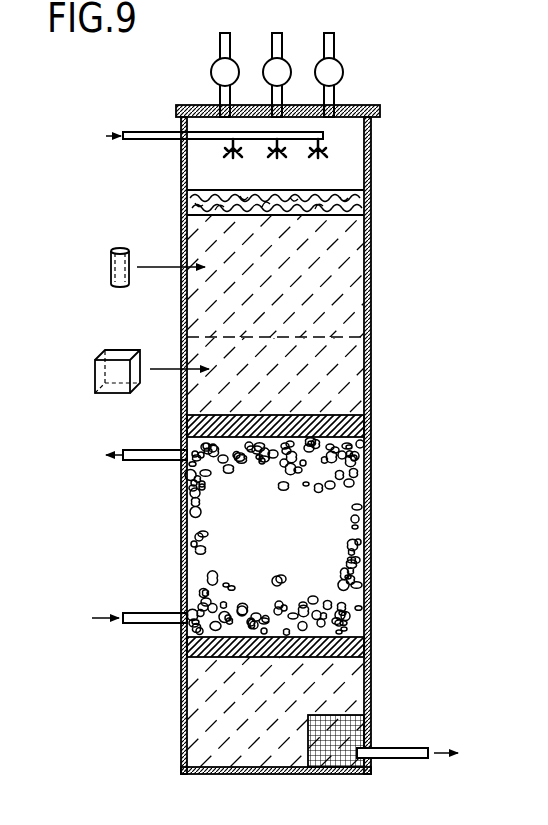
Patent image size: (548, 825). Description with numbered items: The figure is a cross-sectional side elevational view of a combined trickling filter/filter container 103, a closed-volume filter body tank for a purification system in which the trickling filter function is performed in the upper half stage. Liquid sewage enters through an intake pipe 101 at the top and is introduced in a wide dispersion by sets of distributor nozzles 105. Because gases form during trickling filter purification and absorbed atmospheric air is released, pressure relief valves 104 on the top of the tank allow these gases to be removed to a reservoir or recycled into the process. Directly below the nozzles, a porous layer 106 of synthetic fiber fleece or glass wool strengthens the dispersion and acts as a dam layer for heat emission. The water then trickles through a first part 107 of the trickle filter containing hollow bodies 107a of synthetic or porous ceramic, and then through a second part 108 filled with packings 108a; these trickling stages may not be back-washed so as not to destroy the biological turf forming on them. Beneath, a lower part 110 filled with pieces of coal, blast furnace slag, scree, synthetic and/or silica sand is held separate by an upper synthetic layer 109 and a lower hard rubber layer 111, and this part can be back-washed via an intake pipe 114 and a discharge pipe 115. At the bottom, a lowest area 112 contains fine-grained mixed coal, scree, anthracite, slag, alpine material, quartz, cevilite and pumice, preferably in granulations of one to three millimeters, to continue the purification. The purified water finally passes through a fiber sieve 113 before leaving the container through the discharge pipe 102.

The intake pipe 101 is at (151, 131).
The discharge pipe 102 is at (411, 746).
The combined trickling filter/filter container 103 is at (372, 318).
The pressure relief valves 104 is at (267, 62).
The distributor nozzles 105 is at (328, 142).
The porous layer 106 is at (372, 202).
The first part of the trickle filter 107 is at (355, 262).
The hollow bodies 107a is at (112, 257).
The second part of the trickle filter 108 is at (355, 378).
The packings 108a is at (102, 361).
The upper synthetic layer 109 is at (372, 426).
The lower part 110 is at (345, 530).
The lower hard rubber layer 111 is at (372, 647).
The lowest area 112 is at (195, 737).
The fiber sieve 113 is at (350, 762).
The intake pipe for back-washing 114 is at (152, 610).
The discharge pipe for back-washing 115 is at (144, 462).